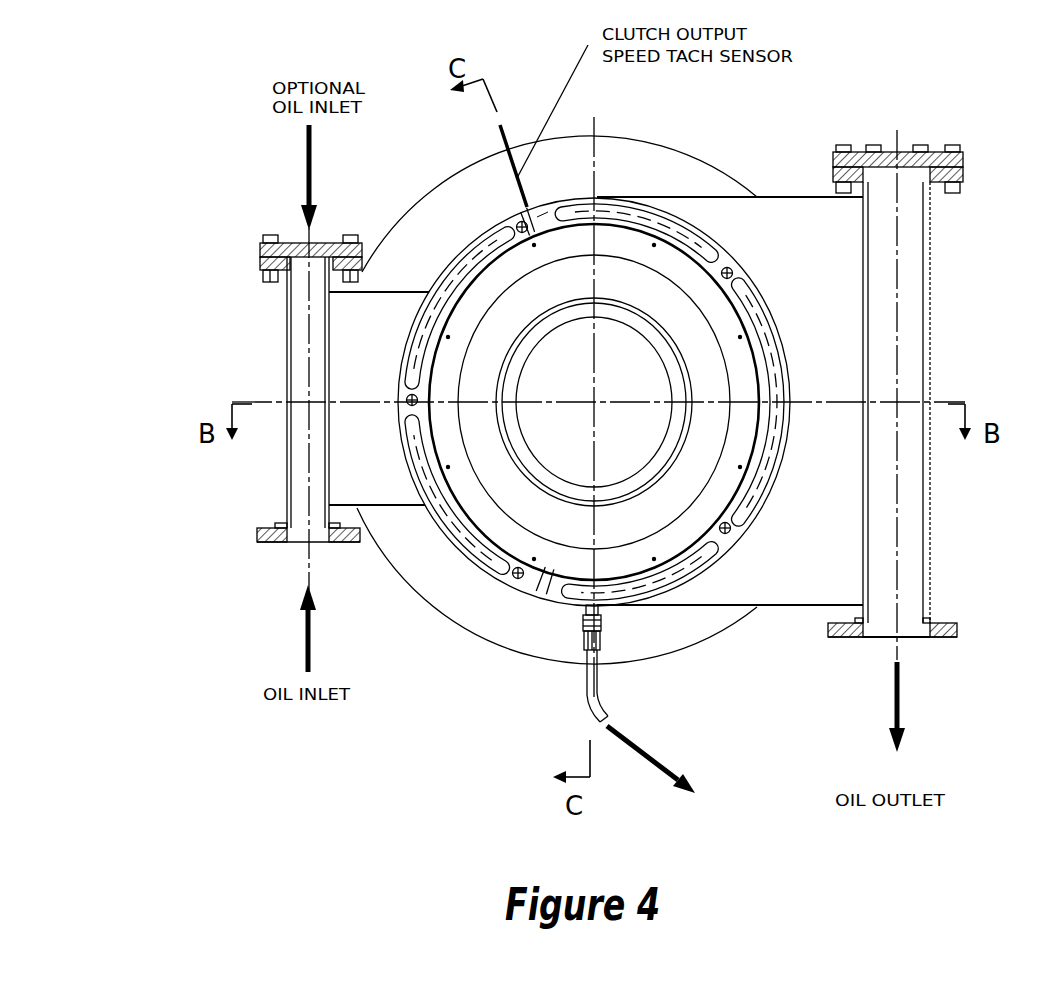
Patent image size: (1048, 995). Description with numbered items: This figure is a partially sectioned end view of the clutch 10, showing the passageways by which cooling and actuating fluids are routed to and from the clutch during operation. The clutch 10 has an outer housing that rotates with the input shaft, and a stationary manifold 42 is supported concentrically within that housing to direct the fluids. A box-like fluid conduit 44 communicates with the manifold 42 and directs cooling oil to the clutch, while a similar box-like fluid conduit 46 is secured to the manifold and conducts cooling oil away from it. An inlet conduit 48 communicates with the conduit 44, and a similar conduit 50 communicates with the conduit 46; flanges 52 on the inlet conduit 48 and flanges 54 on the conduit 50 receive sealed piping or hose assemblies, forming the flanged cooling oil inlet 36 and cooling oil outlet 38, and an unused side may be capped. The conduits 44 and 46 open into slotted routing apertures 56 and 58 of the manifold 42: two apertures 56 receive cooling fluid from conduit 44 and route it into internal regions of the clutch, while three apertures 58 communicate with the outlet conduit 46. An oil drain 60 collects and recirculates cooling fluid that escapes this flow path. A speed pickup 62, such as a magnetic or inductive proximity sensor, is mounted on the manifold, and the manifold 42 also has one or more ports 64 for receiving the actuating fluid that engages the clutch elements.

The clutch 10 is at (432, 688).
The cooling oil inlet 36 is at (293, 542).
The cooling oil outlet 38 is at (908, 635).
The stationary manifold 42 is at (502, 582).
The box-like fluid conduit 44 is at (362, 348).
The box-like fluid conduit 46 is at (843, 318).
The inlet conduit 48 is at (297, 472).
The conduit 50 is at (915, 525).
The flanges 52 is at (262, 248).
The flanges 54 is at (963, 166).
The slotted routing apertures 56 is at (460, 267).
The slotted routing apertures 58 is at (743, 287).
The oil drain 60 is at (598, 678).
The speed pickup 62 is at (532, 200).
The ports 64 is at (523, 590).